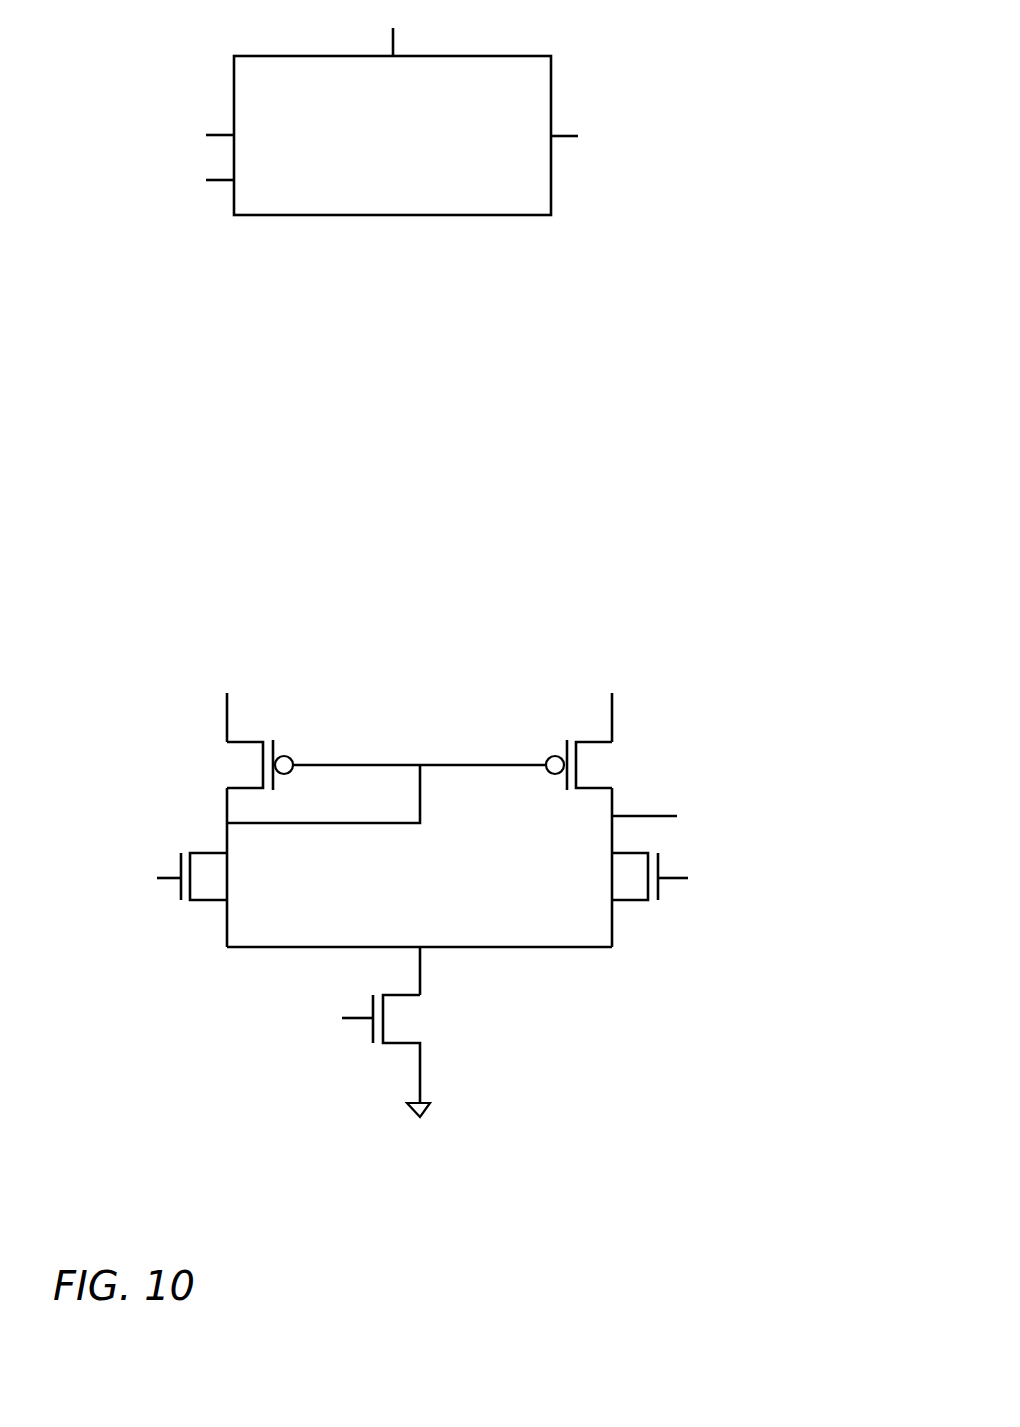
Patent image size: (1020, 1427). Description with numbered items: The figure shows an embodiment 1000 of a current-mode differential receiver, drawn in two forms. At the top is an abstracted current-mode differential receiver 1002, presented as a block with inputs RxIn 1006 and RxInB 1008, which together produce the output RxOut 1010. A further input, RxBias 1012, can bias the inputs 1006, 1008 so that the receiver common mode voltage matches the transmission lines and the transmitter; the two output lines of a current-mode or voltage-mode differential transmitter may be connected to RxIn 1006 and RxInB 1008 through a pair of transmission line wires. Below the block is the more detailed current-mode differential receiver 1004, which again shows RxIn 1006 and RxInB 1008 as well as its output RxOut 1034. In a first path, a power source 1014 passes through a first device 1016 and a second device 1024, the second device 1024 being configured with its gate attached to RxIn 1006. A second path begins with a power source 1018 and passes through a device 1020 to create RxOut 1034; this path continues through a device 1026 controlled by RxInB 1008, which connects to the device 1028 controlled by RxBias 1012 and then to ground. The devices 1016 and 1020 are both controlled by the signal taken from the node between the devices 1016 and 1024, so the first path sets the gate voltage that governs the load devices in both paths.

The embodiment 1000 is at (640, 1233).
The abstracted current-mode differential receiver 1002 is at (640, 238).
The current-mode differential receiver 1004 is at (747, 1149).
The RxIn 1006 is at (98, 918).
The RxInB 1008 is at (767, 917).
The RxOut 1010 is at (594, 136).
The RxBias 1012 is at (280, 1060).
The power source 1014 is at (320, 690).
The first device 1016 is at (235, 762).
The power source 1018 is at (572, 690).
The device 1020 is at (600, 768).
The second device 1024 is at (210, 853).
The NMOS input transistor 1026 is at (642, 903).
The device 1028 is at (420, 1021).
The RxOut 1034 is at (825, 830).